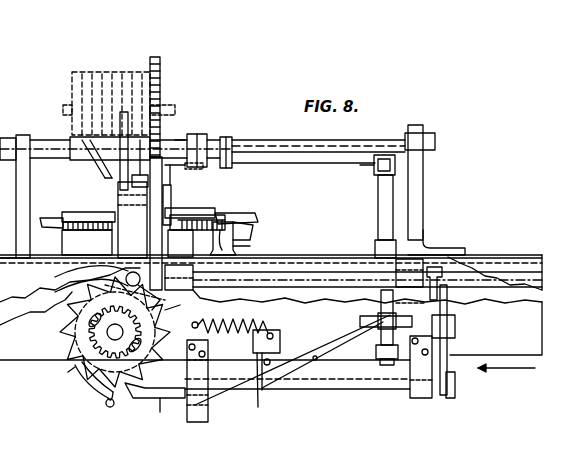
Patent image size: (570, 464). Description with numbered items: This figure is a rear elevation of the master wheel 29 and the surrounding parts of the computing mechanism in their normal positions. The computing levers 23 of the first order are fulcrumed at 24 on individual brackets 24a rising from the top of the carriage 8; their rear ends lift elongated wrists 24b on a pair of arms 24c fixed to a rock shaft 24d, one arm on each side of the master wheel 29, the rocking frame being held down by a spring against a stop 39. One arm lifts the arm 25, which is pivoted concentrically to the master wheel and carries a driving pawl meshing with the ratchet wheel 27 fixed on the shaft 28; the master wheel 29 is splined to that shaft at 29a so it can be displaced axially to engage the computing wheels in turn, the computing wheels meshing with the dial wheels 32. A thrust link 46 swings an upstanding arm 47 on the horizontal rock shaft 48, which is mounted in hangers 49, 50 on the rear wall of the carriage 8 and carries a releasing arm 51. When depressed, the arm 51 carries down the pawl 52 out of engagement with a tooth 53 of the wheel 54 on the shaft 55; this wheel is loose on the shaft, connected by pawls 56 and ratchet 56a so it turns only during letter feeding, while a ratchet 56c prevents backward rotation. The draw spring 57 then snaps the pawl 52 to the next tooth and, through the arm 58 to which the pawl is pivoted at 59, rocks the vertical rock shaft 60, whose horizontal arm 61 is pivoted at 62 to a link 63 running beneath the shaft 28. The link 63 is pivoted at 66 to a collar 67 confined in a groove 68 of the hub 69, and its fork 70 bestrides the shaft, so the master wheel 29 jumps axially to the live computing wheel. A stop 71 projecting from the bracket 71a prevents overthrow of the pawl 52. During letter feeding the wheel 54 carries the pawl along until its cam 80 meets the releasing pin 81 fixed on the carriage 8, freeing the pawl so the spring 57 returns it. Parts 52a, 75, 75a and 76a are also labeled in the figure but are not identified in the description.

The carriage 8 is at (543, 275).
The computing lever of the first order 23 is at (55, 221).
The fulcrum 24 is at (240, 228).
The bracket 24a is at (250, 246).
The elongated wrist 24b is at (68, 210).
The arm 24c is at (172, 170).
The rock shaft 24d is at (135, 200).
The arm 25 is at (104, 178).
The ratchet wheel 27 is at (128, 178).
The shaft 28 is at (290, 150).
The master wheel 29 is at (161, 64).
The spline 29a is at (196, 124).
The dial wheel 32 is at (108, 78).
The stop 39 is at (62, 246).
The thrust link 46 is at (440, 300).
The upstanding arm 47 is at (448, 345).
The horizontal rock shaft 48 is at (392, 386).
The hanger 49 is at (208, 352).
The hanger 50 is at (428, 398).
The releasing arm 51 is at (185, 390).
The pawl 52 is at (157, 413).
The rod end 52a is at (208, 412).
The tooth 53 is at (118, 397).
The wheel 54 is at (74, 368).
The shaft 55 is at (121, 331).
The pawl 56 is at (70, 328).
The ratchet 56a is at (72, 278).
The ratchet 56c is at (168, 316).
The draw spring 57 is at (280, 350).
The arm 58 is at (360, 321).
The pivot 59 is at (382, 358).
The vertical rock shaft 60 is at (378, 220).
The horizontal arm 61 is at (396, 163).
The pivot 62 is at (375, 176).
The link 63 is at (328, 165).
The pivot 66 is at (194, 170).
The collar 67 is at (200, 134).
The groove 68 is at (225, 137).
The hub 69 is at (195, 134).
The fork 70 is at (233, 143).
The stop 71 is at (106, 408).
The bracket 71a is at (100, 400).
The bar 75 is at (150, 246).
The frame member 75a is at (272, 284).
The block 76a is at (445, 283).
The cam 80 is at (258, 408).
The releasing pin 81 is at (305, 368).